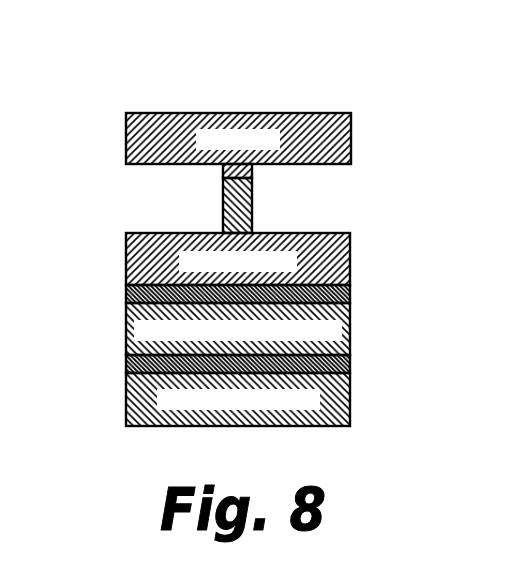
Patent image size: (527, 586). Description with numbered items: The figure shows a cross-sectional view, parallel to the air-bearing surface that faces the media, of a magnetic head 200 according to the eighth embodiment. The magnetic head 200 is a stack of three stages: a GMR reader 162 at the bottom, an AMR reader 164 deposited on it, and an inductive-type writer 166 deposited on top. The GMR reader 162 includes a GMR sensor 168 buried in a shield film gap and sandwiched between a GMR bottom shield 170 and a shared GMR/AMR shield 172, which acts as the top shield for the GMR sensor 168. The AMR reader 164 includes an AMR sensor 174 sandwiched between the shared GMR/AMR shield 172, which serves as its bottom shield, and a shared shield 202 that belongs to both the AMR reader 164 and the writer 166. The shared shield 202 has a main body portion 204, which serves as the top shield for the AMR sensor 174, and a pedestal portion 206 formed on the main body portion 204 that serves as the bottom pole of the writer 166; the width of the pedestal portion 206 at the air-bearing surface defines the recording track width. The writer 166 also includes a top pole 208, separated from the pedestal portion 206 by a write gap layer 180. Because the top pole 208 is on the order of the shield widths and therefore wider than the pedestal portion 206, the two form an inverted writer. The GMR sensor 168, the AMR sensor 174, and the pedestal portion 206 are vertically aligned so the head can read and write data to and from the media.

The magnetic head 200 is at (310, 80).
The top pole 208 is at (352, 137).
The write gap layer 180 is at (256, 173).
The pedestal portion 206 is at (253, 218).
The main body portion 204 is at (330, 233).
The AMR sensor 174 is at (270, 296).
The shared GMR/AMR shield 172 is at (350, 322).
The GMR sensor 168 is at (270, 365).
The GMR bottom shield 170 is at (350, 398).
The shared shield 202 is at (411, 169).
The writer 166 is at (62, 112).
The AMR reader 164 is at (84, 233).
The GMR reader 162 is at (101, 303).